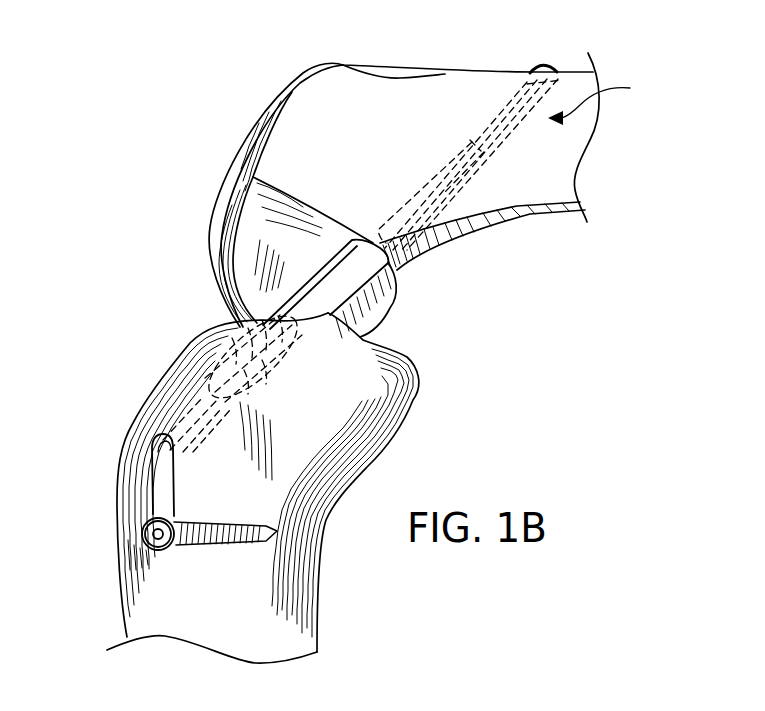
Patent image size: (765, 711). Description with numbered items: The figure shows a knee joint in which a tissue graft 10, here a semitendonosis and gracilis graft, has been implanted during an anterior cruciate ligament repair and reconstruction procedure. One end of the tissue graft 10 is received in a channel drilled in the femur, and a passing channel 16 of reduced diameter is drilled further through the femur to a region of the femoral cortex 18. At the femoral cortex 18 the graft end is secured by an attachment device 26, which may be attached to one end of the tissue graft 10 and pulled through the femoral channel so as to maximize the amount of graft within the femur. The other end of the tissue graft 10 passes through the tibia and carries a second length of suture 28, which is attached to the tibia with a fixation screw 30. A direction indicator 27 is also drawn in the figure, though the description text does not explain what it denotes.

The tissue graft 10 is at (360, 275).
The passing channel 16 is at (500, 150).
The femoral cortex 18 is at (505, 73).
The attachment device 26 is at (543, 65).
The direction of graft tensioning 27 is at (604, 101).
The second length of suture 28 is at (155, 502).
The fixation screw 30 is at (220, 545).